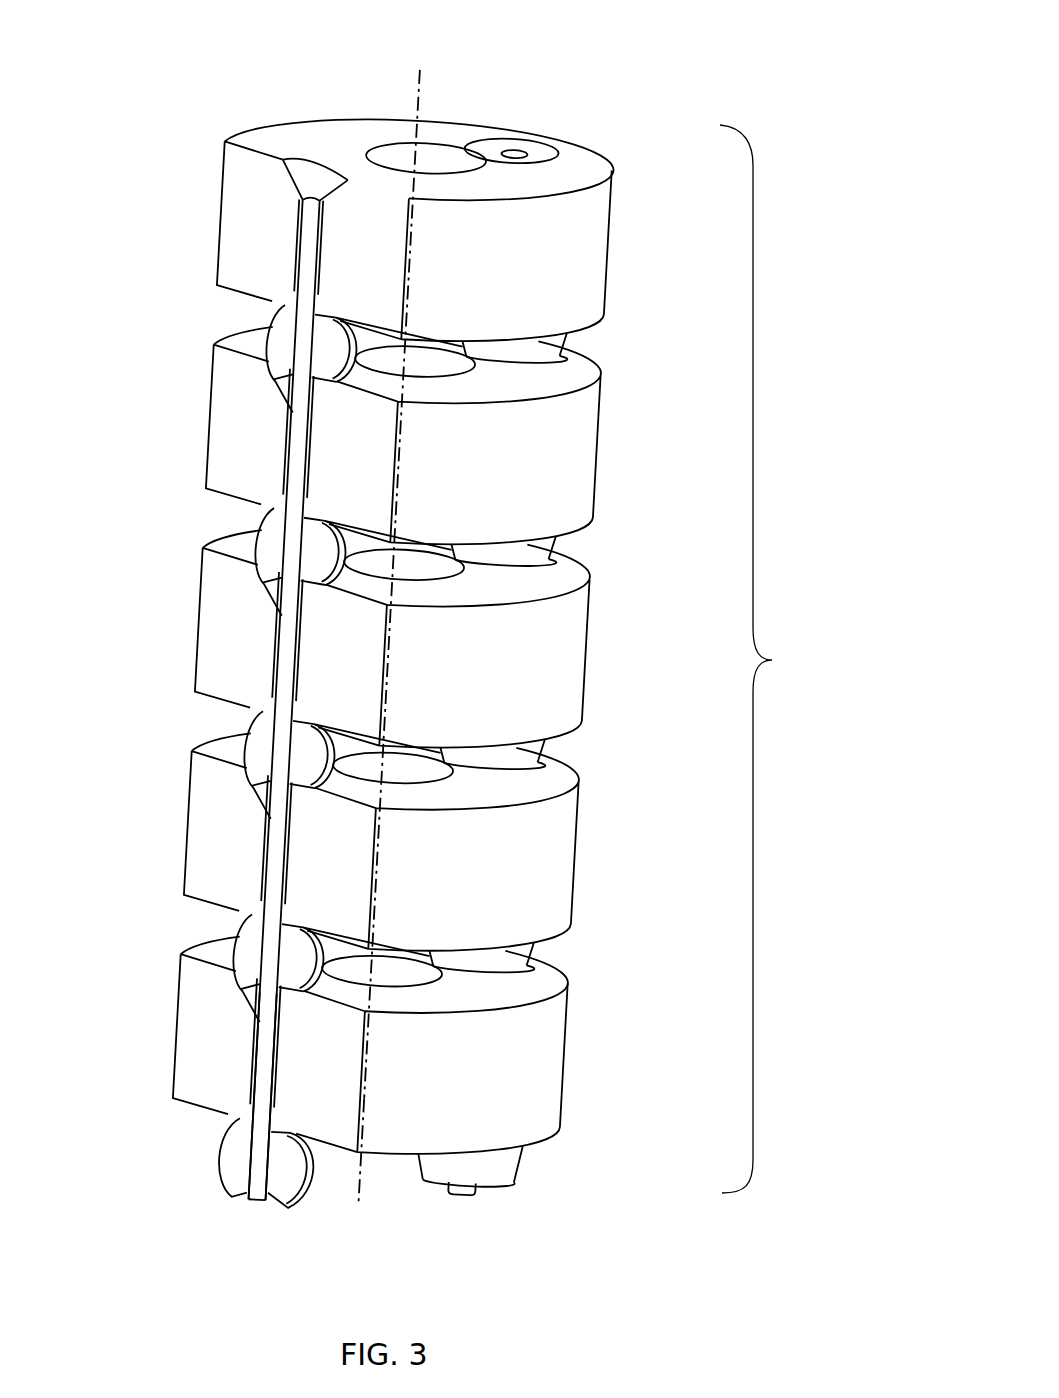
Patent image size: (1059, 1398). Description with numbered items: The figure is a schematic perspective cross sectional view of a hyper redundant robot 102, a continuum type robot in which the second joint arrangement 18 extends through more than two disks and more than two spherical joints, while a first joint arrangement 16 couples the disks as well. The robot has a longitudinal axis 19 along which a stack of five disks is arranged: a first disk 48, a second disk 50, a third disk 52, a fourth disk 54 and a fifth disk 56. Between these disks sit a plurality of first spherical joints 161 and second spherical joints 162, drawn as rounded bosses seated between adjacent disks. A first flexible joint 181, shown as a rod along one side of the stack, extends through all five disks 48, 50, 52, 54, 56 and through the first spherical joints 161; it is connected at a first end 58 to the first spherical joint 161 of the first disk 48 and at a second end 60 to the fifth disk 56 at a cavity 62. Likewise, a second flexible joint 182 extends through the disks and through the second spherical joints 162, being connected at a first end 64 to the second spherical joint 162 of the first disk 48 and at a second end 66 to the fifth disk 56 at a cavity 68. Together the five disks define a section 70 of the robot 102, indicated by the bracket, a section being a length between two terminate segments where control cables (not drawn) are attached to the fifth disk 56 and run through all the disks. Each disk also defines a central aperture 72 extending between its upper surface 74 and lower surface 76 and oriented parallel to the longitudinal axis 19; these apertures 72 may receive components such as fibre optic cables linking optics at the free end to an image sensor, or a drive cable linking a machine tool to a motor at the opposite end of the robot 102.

The hyper redundant robot 102 is at (446, 650).
The first joint arrangement 16 is at (377, 664).
The second joint arrangement 18 is at (208, 737).
The longitudinal axis 19 is at (417, 228).
The first disk 48 is at (411, 1047).
The second disk 50 is at (576, 847).
The third disk 52 is at (589, 636).
The fourth disk 54 is at (599, 430).
The fifth disk 56 is at (450, 228).
The first end 58 is at (220, 1220).
The second end 60 is at (290, 202).
The cavity 62 is at (301, 197).
The first end 64 is at (456, 1213).
The second end 66 is at (490, 143).
The cavity 68 is at (555, 128).
The section 70 is at (774, 660).
The central aperture 72 is at (405, 145).
The upper surface 74 is at (523, 993).
The lower surface 76 is at (373, 1153).
The first spherical joint 161 is at (278, 342).
The second spherical joint 162 is at (565, 343).
The first flexible joint 181 is at (265, 1065).
The second flexible joint 182 is at (510, 152).